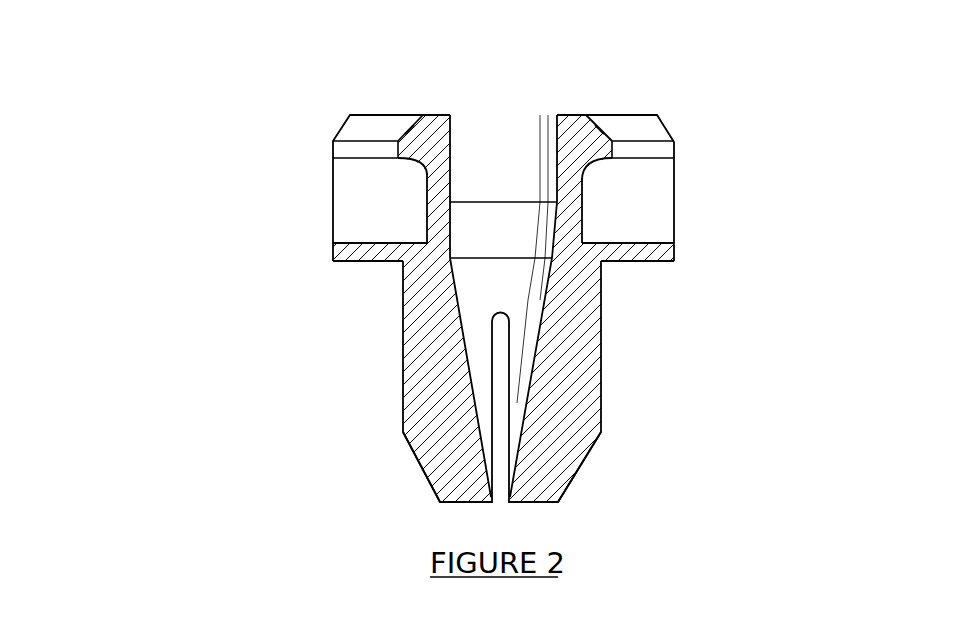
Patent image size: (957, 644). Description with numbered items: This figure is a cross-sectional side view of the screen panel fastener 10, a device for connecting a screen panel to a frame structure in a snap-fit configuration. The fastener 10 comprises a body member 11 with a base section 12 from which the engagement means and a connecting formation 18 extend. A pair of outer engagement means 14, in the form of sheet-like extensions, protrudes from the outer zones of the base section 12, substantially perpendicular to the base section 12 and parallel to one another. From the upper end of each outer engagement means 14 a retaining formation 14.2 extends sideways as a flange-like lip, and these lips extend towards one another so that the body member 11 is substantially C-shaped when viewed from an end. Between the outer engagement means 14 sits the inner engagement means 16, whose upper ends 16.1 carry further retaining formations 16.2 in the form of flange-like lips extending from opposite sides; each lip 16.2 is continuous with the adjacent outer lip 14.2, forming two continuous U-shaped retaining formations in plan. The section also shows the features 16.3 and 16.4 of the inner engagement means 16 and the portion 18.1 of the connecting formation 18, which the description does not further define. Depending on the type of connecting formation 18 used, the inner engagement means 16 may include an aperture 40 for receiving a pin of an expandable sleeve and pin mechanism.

The screen panel fastener 10 is at (181, 140).
The body member 11 is at (262, 232).
The base section 12 is at (357, 263).
The outer engagement means 14 is at (662, 172).
The retaining formation 14.2 is at (343, 150).
The inner engagement means 16 is at (435, 215).
The upper end of inner engagement means 16.1 is at (557, 148).
The retaining formation 16.2 is at (398, 142).
The insert edge 16.3 is at (410, 137).
The insert fillet 16.4 is at (398, 160).
The connecting formation 18 is at (316, 415).
The nozzle tip chamfer 18.1 is at (422, 467).
The aperture 40 is at (507, 238).